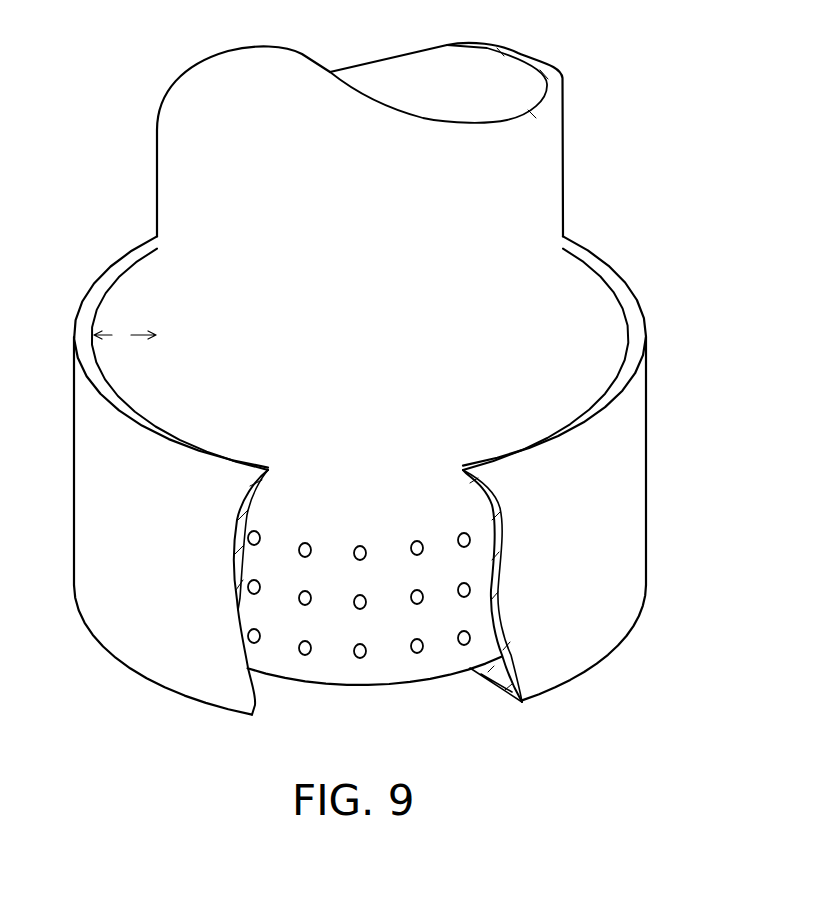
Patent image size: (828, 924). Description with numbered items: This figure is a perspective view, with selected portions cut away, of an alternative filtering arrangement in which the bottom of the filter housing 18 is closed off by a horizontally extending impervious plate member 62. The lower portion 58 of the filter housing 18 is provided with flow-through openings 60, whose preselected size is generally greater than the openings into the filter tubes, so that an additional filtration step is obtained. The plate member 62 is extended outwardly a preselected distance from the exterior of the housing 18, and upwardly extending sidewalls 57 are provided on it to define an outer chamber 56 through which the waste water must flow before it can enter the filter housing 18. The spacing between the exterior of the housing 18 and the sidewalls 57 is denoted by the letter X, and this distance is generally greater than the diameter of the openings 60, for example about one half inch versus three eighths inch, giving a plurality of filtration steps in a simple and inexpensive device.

The filter housing 18 is at (540, 165).
The outer chamber 56 is at (653, 453).
The sidewalls 57 is at (644, 520).
The lower portion of the filter housing 58 is at (398, 612).
The flow-through openings 60 is at (300, 612).
The plate member 62 is at (525, 704).